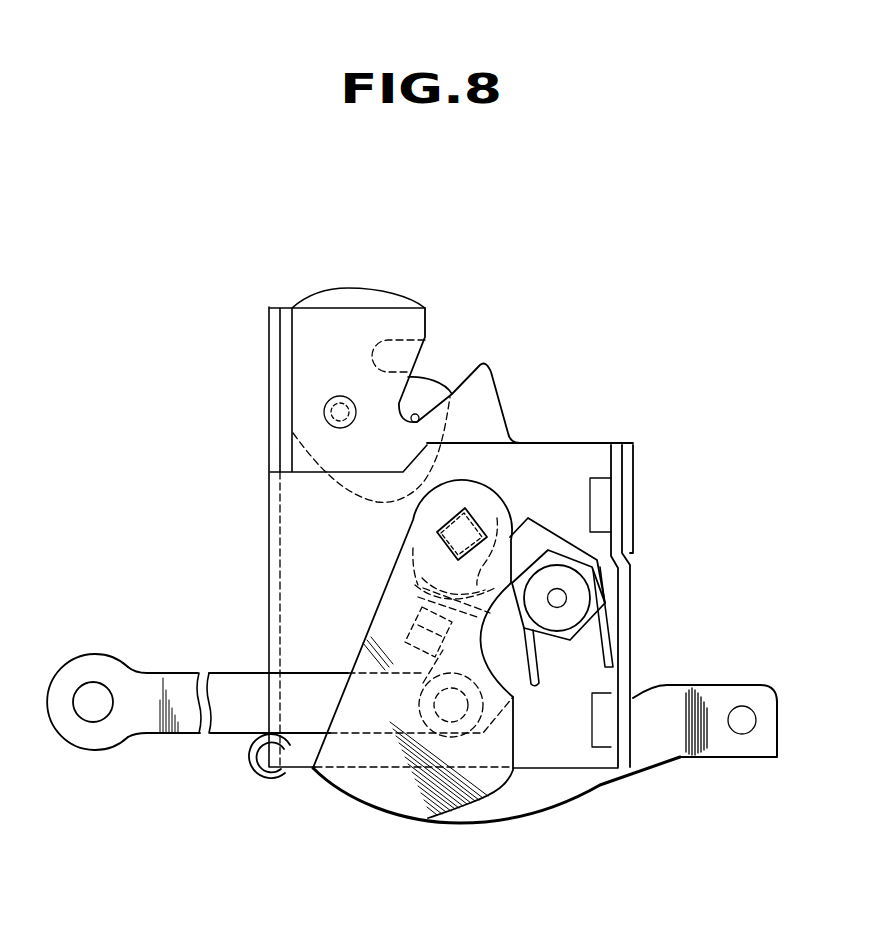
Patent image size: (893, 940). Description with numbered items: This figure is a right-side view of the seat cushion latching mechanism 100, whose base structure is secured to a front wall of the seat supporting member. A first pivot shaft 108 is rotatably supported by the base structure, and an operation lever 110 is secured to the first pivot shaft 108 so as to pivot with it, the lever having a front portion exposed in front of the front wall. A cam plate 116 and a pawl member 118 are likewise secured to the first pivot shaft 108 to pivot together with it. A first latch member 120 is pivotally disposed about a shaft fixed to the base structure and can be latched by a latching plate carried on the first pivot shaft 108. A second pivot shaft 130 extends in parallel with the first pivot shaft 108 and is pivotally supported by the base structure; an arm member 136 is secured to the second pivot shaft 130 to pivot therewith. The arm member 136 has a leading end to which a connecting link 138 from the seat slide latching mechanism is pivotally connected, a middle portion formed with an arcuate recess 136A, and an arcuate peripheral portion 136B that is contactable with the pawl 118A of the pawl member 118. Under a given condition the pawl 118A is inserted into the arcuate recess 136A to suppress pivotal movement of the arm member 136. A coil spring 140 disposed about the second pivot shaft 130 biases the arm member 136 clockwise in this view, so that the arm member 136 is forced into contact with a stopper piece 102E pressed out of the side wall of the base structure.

The seat cushion latching mechanism 100 is at (558, 334).
The stopper piece 102E is at (423, 627).
The first pivot shaft 108 is at (470, 525).
The operation lever 110 is at (503, 808).
The cam plate 116 is at (395, 797).
The pawl member 118 is at (395, 541).
The pawl 118A is at (410, 588).
The first latch member 120 is at (350, 288).
The second pivot shaft 130 is at (570, 594).
The arm member 136 is at (542, 535).
The arcuate recess 136A is at (497, 618).
The arcuate peripheral portion 136B is at (553, 544).
The connecting link 138 is at (97, 740).
The coil spring 140 is at (614, 634).